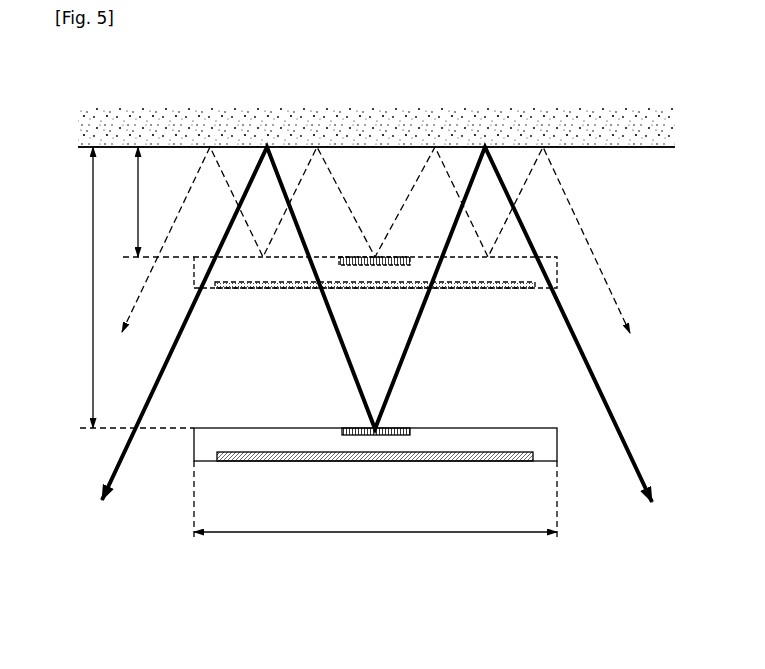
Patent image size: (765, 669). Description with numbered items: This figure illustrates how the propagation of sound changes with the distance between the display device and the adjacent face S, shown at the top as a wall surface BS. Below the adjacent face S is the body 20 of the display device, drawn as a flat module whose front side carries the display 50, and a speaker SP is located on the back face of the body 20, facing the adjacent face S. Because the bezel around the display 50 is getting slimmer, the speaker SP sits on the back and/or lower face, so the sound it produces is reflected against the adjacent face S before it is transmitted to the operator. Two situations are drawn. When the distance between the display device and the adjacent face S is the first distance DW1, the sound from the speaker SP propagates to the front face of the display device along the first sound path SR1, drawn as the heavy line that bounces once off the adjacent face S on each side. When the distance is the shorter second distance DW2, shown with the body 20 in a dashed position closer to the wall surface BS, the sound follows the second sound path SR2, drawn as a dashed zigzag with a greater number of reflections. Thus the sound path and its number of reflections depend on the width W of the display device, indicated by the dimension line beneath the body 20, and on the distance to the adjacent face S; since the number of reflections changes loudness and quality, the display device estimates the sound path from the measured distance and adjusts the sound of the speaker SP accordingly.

The adjacent face S is at (405, 61).
The wall surface BS is at (383, 112).
The first distance DW1 is at (126, 287).
The second distance DW2 is at (149, 202).
The first sound path SR1 is at (610, 409).
The second sound path SR2 is at (608, 283).
The body 20 is at (462, 440).
The display 50 is at (305, 461).
The speaker SP is at (378, 436).
The width W is at (375, 505).